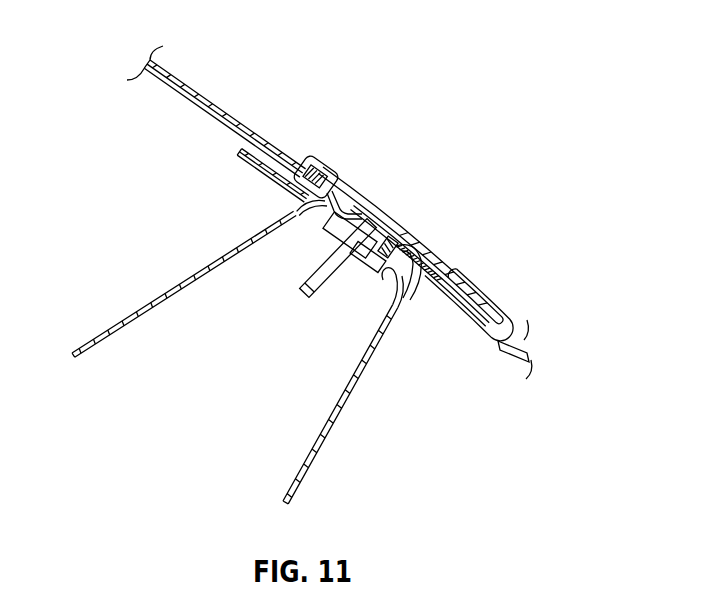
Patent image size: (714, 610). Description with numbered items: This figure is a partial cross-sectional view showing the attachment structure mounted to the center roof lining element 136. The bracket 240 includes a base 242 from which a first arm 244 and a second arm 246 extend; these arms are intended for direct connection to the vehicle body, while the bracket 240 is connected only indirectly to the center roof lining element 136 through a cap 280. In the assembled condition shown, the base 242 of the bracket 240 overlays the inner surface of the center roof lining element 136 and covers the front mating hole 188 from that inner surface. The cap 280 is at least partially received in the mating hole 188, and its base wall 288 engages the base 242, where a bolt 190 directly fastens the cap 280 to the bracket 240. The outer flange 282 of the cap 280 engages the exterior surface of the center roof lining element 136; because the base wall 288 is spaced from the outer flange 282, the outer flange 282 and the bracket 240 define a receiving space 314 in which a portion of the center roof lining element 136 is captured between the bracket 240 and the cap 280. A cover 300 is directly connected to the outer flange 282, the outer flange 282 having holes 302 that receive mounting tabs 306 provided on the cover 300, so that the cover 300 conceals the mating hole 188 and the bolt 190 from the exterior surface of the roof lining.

The center roof lining element 136 is at (158, 64).
The holes 302 is at (323, 163).
The cap 280 is at (352, 192).
The cover 300 is at (403, 213).
The base wall 288 is at (415, 234).
The outer flange 282 is at (452, 262).
The mounting tabs 306 is at (303, 206).
The second arm 246 is at (160, 292).
The bracket 240 is at (118, 334).
The bolt 190 is at (318, 300).
The receiving space 314 is at (418, 283).
The front mating hole 188 is at (404, 290).
The base 242 is at (383, 272).
The first arm 244 is at (298, 484).